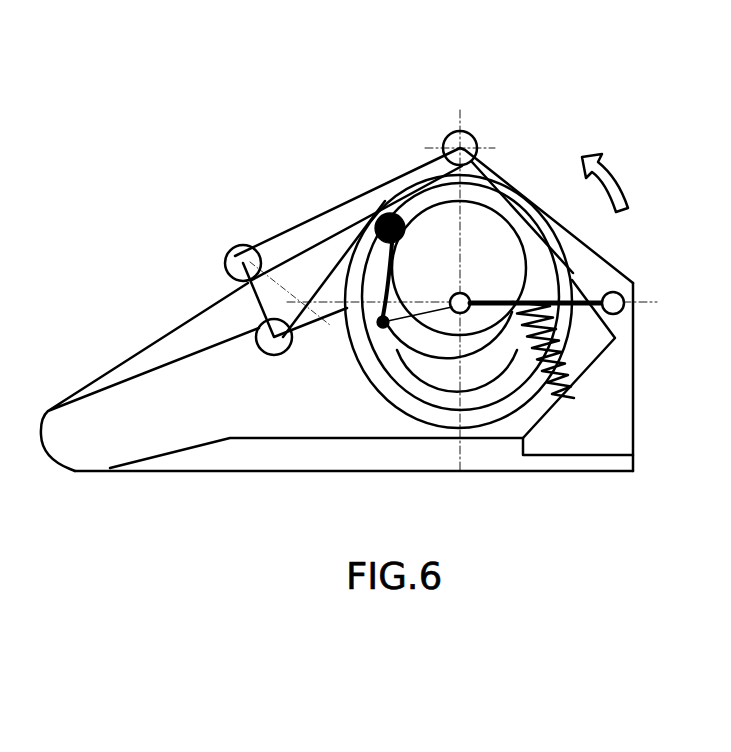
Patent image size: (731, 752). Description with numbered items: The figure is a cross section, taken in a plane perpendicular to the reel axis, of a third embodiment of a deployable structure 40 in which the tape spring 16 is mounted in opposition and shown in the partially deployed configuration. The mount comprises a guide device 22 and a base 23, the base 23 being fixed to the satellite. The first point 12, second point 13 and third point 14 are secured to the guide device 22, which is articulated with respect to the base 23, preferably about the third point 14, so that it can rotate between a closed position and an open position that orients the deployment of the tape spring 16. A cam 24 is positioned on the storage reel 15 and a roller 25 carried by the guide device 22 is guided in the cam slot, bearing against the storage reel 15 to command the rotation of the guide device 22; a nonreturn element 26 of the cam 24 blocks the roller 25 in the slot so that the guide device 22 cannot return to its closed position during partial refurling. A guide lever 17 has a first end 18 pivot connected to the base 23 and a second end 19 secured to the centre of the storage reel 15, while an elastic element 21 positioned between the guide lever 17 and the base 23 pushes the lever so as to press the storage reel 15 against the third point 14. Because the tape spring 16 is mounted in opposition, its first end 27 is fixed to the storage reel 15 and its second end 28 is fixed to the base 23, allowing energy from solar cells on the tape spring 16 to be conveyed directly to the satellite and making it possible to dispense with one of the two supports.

The deployable structure 40 is at (276, 94).
The first point 12 is at (232, 248).
The second point 13 is at (270, 348).
The third point 14 is at (474, 130).
The storage reel 15 is at (384, 403).
The tape spring 16 is at (162, 332).
The guide lever 17 is at (508, 300).
The first end 18 is at (637, 287).
The second end 19 is at (452, 308).
The elastic element 21 is at (517, 333).
The guide device 22 is at (323, 213).
The base 23 is at (633, 397).
The cam 24 is at (418, 386).
The roller 25 is at (396, 214).
The nonreturn element 26 is at (383, 322).
The first end 27 is at (498, 422).
The second end 28 is at (608, 463).